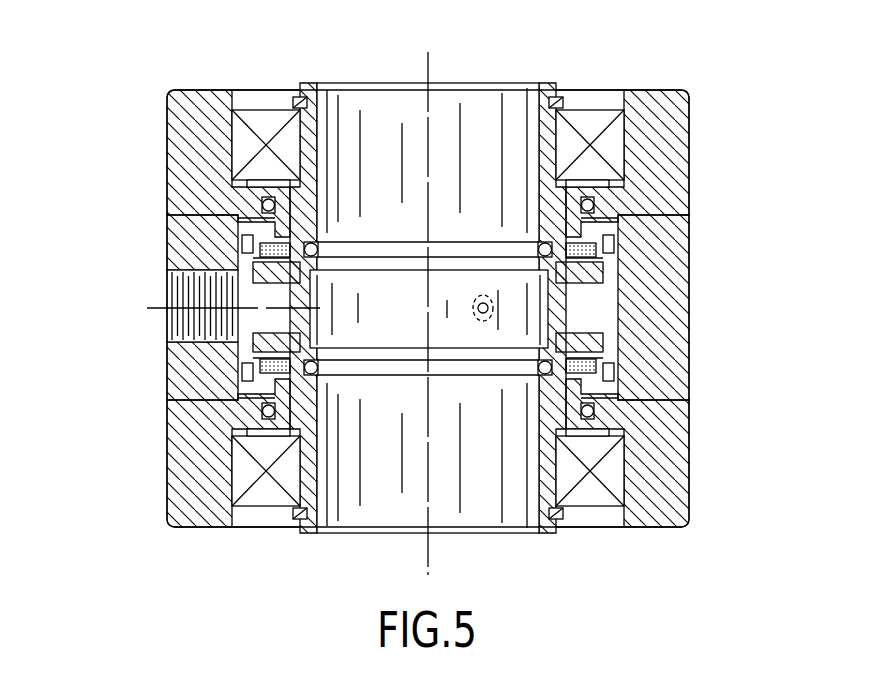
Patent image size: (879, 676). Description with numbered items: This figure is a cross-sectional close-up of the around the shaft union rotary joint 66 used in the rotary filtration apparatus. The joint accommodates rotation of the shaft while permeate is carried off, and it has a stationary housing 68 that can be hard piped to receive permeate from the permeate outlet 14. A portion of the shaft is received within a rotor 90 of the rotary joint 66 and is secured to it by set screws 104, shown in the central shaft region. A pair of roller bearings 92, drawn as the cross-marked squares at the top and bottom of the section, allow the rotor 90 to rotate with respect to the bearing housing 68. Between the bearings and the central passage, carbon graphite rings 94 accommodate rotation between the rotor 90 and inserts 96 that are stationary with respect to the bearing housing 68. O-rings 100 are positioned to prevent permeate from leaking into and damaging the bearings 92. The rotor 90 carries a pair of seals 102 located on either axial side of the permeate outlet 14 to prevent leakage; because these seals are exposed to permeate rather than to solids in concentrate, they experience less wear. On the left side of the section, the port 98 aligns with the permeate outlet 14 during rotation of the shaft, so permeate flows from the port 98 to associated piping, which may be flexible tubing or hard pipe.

The around the shaft union rotary joint 66 is at (128, 70).
The stationary housing 68 is at (673, 513).
The rotor 90 is at (313, 125).
The roller bearings 92 is at (583, 112).
The carbon graphite rings 94 is at (600, 252).
The inserts 96 is at (585, 220).
The port 98 is at (187, 320).
The O-rings 100 is at (595, 205).
The seals 102 is at (537, 245).
The set screws 104 is at (492, 310).
The permeate outlet 14 is at (298, 297).